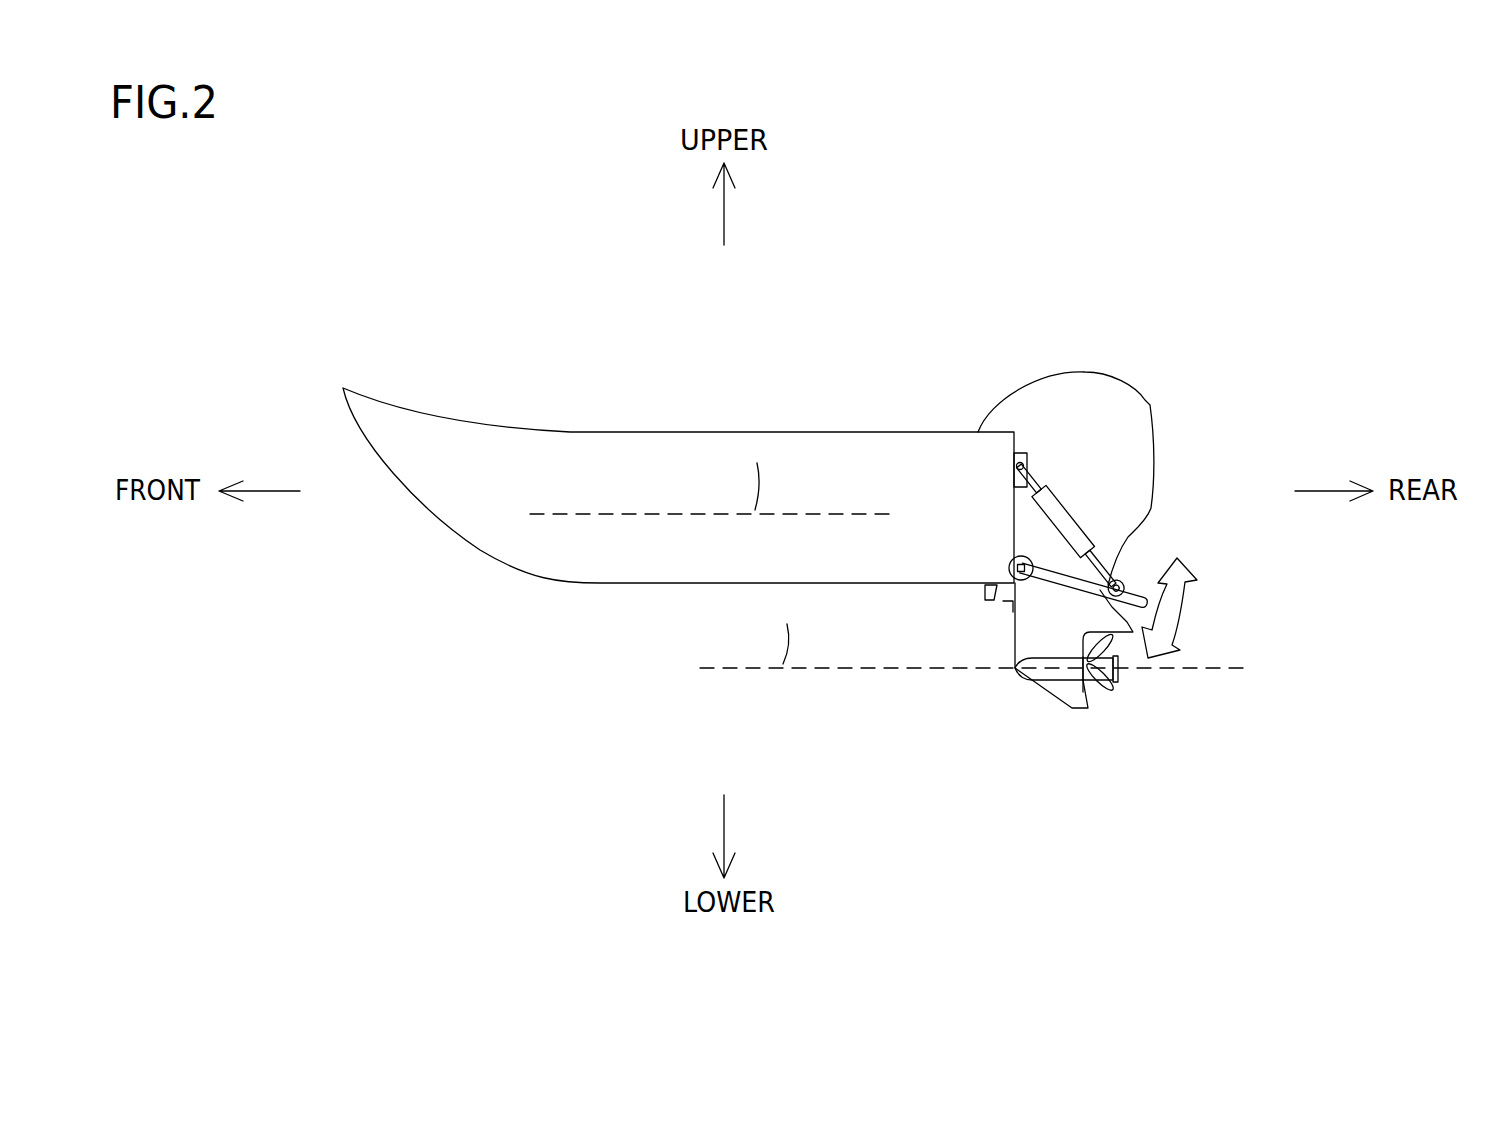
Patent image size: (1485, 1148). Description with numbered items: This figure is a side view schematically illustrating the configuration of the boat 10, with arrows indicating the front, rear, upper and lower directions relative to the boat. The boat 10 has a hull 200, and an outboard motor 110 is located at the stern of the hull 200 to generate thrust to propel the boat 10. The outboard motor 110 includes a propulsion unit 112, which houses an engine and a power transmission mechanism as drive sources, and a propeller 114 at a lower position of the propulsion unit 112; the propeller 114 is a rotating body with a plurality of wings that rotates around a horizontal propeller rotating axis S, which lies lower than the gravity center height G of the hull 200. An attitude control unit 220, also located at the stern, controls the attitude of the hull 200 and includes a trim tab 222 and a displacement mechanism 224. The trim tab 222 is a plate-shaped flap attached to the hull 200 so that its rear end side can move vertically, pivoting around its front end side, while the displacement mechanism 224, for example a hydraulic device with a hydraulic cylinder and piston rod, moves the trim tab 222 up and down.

The boat 10 is at (645, 346).
The hull 200 is at (483, 538).
The outboard motor 110 is at (1165, 388).
The propulsion unit 112 is at (1140, 443).
The propeller 114 is at (1117, 690).
The attitude control unit 220 is at (1063, 454).
The trim tab 222 is at (1050, 583).
The displacement mechanism 224 is at (1083, 507).